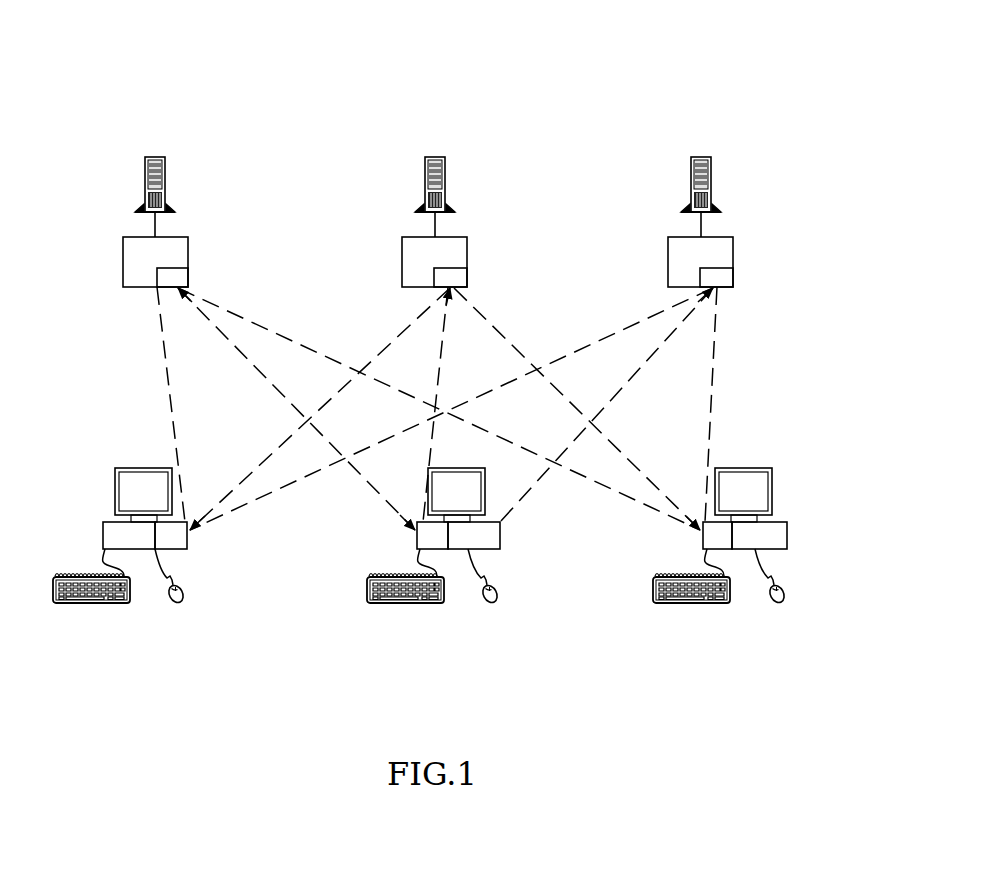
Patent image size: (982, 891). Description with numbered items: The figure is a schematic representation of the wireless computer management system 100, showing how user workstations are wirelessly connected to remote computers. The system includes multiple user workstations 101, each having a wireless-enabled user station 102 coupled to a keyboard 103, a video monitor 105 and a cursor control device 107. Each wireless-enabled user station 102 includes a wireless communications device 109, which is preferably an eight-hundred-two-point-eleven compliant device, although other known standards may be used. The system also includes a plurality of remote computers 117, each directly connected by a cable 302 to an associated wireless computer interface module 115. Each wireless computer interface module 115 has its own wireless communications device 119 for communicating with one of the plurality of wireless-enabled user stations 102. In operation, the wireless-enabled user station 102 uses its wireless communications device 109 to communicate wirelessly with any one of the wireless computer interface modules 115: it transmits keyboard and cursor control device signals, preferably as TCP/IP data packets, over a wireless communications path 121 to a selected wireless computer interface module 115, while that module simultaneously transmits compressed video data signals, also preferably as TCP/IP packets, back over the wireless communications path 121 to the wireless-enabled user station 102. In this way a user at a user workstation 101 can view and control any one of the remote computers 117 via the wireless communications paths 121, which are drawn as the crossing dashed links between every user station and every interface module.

The wireless computer management system 100 is at (560, 100).
The remote computer 117 is at (157, 153).
The cable 302 is at (150, 232).
The wireless computer interface module 115 is at (428, 262).
The wireless communications device 119 is at (445, 277).
The wireless communications path 121 is at (142, 384).
The user workstation 101 is at (58, 497).
The video monitor 105 is at (443, 495).
The wireless-enabled user station 102 is at (445, 535).
The wireless communications device 109 is at (443, 535).
The keyboard 103 is at (73, 607).
The cursor control device 107 is at (176, 606).